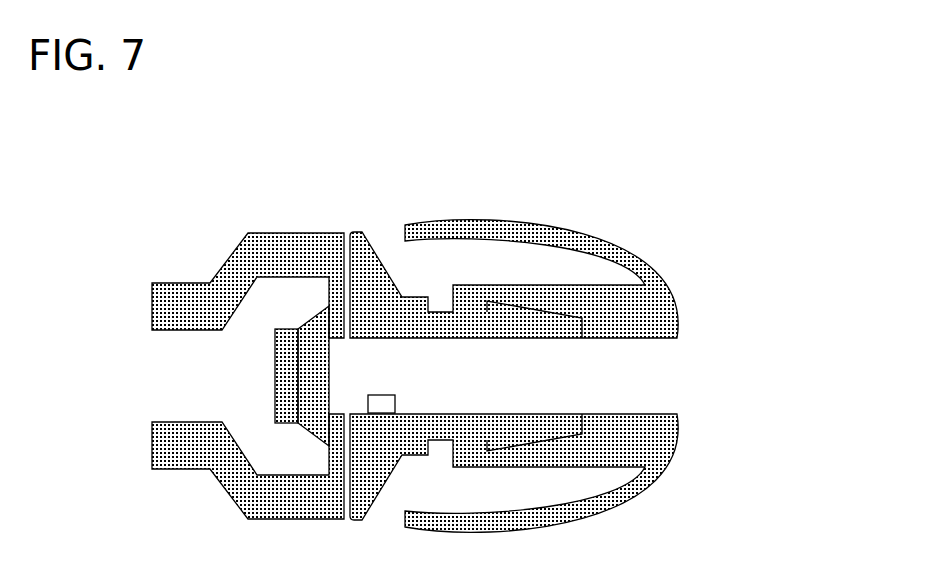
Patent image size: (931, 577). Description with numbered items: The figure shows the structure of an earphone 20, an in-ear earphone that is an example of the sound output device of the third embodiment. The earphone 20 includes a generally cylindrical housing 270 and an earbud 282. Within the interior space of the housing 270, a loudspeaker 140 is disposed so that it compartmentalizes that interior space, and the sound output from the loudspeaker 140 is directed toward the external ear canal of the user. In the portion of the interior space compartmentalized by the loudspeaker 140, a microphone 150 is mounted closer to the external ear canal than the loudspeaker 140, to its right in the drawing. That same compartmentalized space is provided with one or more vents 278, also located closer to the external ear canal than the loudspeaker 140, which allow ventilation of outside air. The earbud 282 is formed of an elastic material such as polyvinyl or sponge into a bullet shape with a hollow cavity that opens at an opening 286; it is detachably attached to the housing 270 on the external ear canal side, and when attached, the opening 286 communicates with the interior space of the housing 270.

The earphone 20 is at (736, 141).
The loudspeaker 140 is at (277, 368).
The microphone 150 is at (383, 396).
The housing 270 is at (303, 245).
The vent 278 is at (347, 241).
The earbud 282 is at (562, 225).
The opening 286 is at (690, 375).